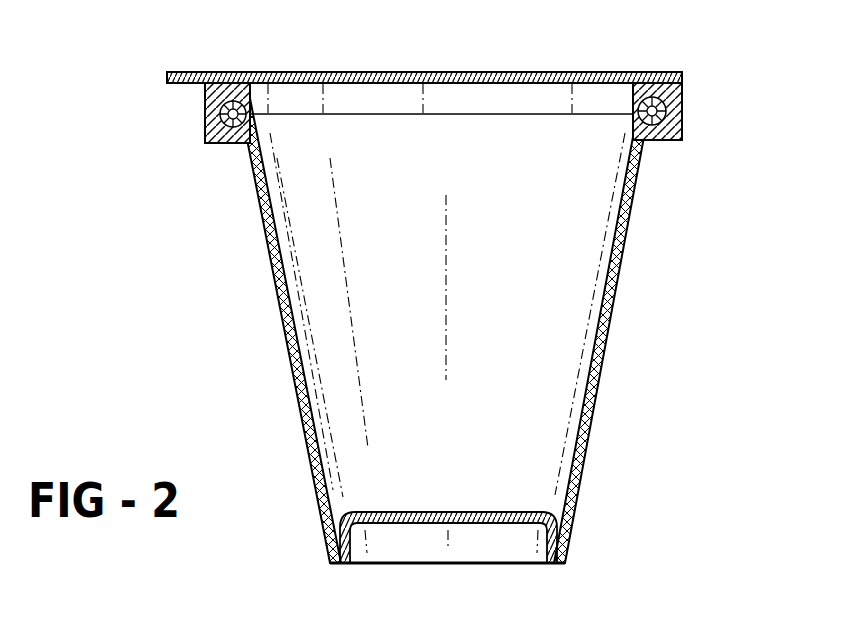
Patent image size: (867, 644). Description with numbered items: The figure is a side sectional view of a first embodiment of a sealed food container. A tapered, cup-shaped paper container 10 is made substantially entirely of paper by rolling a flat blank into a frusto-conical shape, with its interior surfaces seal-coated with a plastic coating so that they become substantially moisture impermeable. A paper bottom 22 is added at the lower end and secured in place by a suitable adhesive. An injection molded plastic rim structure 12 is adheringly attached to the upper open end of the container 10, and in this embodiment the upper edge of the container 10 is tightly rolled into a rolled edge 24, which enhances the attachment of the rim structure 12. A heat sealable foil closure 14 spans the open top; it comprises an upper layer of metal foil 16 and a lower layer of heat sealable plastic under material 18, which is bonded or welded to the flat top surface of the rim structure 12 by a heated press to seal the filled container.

The cup-shaped paper container 10 is at (600, 380).
The rim structure 12 is at (685, 110).
The foil closure 14 is at (420, 72).
The lid top surface 16 is at (205, 72).
The plastic under material 18 is at (187, 84).
The paper bottom 22 is at (470, 520).
The rolled edge 24 is at (660, 127).